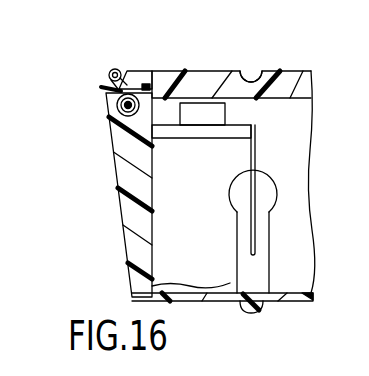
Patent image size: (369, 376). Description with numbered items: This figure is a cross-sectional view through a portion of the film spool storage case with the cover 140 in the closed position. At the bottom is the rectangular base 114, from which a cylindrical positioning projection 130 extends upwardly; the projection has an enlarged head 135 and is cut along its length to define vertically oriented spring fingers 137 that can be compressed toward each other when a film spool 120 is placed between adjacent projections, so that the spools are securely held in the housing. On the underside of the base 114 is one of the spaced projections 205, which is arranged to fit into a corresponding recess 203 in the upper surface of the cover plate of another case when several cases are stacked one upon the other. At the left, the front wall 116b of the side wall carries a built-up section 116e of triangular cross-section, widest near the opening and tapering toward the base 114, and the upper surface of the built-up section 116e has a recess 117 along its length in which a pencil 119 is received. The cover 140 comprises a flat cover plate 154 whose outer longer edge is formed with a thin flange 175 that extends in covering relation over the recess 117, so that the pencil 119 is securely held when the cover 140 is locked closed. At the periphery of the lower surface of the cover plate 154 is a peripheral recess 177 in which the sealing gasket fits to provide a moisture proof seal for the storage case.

The cover 140 is at (133, 67).
The peripheral recess 177 is at (146, 84).
The thin flange 175 is at (108, 74).
The recess 117 is at (107, 97).
The pencil 119 is at (119, 113).
The built-up section 116e is at (110, 188).
The front wall 116b is at (124, 226).
The film spool 120 is at (240, 125).
The recess 203 is at (257, 71).
The flat cover plate 154 is at (310, 72).
The spring fingers 137 is at (277, 174).
The enlarged head 135 is at (234, 175).
The positioning projection 130 is at (270, 228).
The projection 205 is at (255, 313).
The base 114 is at (202, 302).